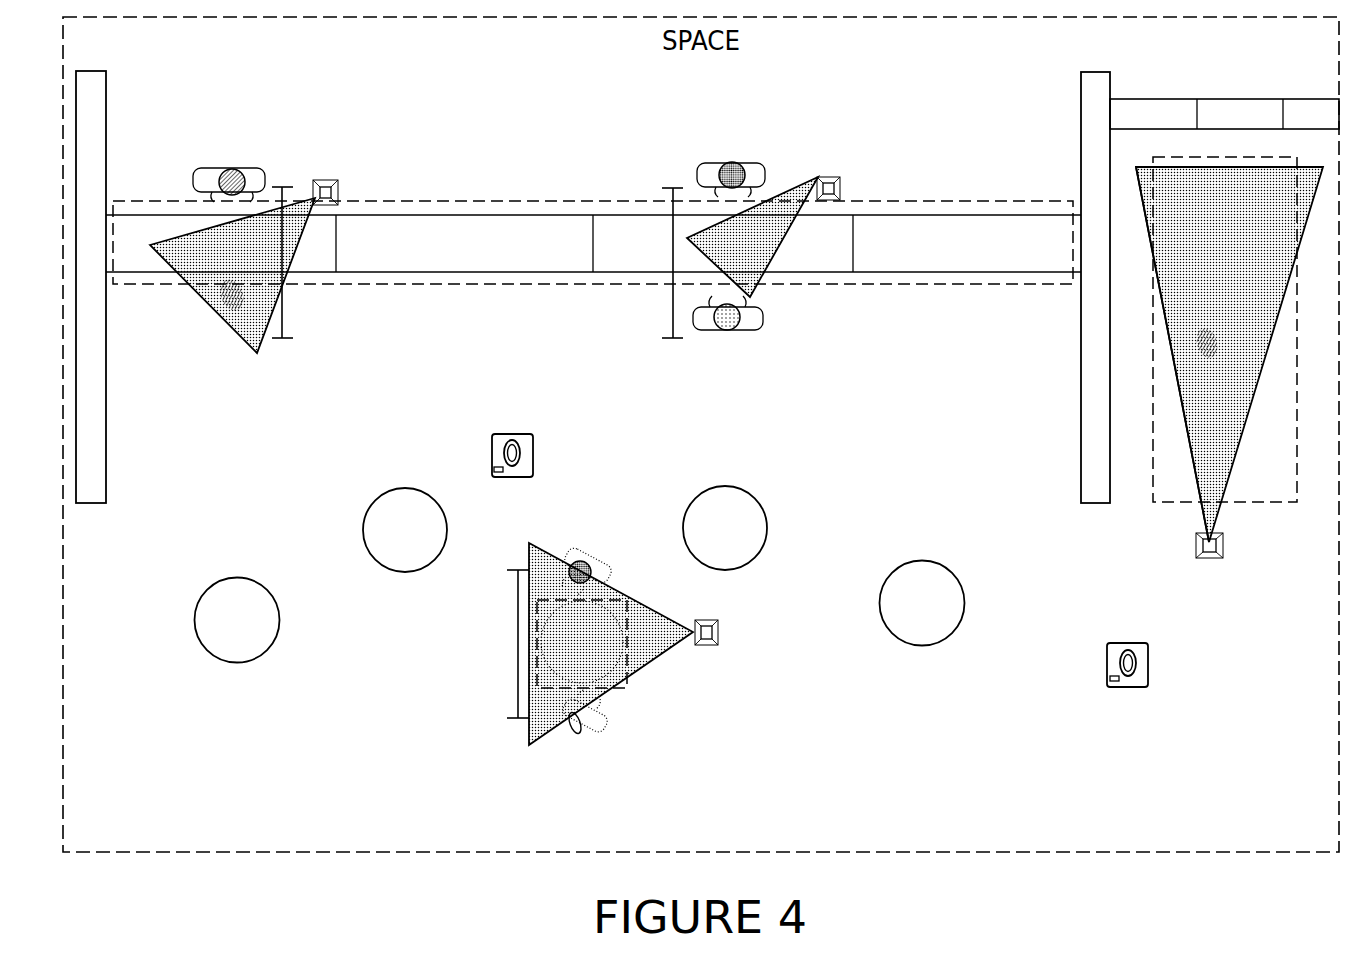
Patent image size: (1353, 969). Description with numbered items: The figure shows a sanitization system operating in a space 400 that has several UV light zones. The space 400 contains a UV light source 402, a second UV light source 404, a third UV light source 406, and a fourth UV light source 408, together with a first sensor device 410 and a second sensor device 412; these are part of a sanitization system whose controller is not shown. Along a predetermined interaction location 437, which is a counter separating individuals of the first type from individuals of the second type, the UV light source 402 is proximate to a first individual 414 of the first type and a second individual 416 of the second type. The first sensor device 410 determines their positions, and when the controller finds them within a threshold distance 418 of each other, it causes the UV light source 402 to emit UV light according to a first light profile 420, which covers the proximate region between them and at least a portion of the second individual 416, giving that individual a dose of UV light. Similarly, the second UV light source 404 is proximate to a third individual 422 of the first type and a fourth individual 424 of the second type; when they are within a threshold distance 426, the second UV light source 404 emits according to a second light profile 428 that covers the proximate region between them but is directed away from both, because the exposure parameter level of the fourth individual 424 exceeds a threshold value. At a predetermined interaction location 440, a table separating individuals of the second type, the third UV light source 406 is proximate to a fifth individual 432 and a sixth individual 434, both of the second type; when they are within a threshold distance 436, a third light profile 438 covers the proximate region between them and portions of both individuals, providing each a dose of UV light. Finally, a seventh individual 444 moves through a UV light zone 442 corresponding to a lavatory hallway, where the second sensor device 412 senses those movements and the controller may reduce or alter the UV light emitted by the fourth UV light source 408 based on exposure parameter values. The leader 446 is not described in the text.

The space 400 is at (110, 53).
The UV light source 402 is at (340, 180).
The second UV light source 404 is at (840, 178).
The third UV light source 406 is at (720, 620).
The fourth UV light source 408 is at (1218, 533).
The first sensor device 410 is at (533, 445).
The second sensor device 412 is at (1107, 663).
The first individual 414 is at (250, 168).
The second individual 416 is at (213, 292).
The threshold distance 418 is at (282, 320).
The first light profile 420 is at (248, 343).
The third individual 422 is at (763, 175).
The fourth individual 424 is at (757, 328).
The threshold distance 426 is at (660, 192).
The second light profile 428 is at (687, 237).
The fifth individual 432 is at (612, 575).
The sixth individual 434 is at (610, 712).
The threshold distance 436 is at (513, 573).
The predetermined interaction location 437 is at (860, 284).
The third light profile 438 is at (640, 672).
The predetermined interaction location 440 is at (627, 600).
The UV light zone 442 is at (1290, 487).
The seventh individual 444 is at (1240, 347).
The field of view edge 446 is at (1192, 470).